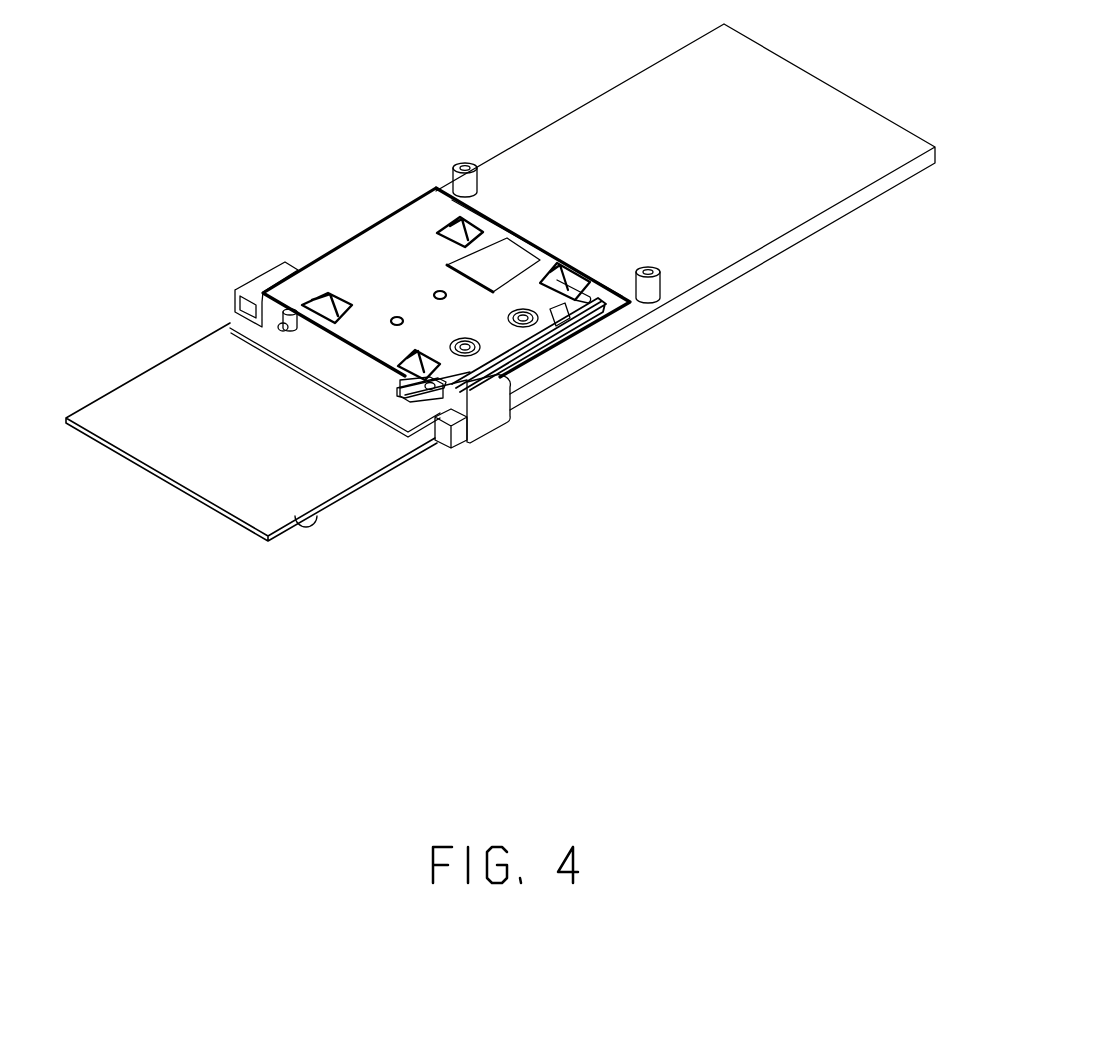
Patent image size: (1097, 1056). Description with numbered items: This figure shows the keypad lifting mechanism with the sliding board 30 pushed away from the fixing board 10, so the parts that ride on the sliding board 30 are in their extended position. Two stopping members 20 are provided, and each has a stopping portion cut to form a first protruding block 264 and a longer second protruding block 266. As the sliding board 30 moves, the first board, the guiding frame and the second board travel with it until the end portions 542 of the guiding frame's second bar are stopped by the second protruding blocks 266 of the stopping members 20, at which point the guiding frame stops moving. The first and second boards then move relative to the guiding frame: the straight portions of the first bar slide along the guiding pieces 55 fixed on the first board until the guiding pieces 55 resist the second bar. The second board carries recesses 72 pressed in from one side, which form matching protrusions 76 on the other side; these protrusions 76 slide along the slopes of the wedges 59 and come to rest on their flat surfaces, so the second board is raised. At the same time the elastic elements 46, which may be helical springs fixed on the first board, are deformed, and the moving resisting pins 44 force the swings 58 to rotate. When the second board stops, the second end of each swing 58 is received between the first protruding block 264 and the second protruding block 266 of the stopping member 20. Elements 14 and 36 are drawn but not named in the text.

The fixing board 10 is at (215, 492).
The positioning post 14 is at (305, 530).
The stopping member 20 is at (461, 447).
The first protruding block 264 is at (428, 425).
The second protruding block 266 is at (478, 376).
The sliding board 30 is at (610, 113).
The spacer 36 is at (652, 292).
The resisting pin 44 is at (279, 331).
The elastic element 46 is at (527, 322).
The guiding piece 55 is at (563, 322).
The swing 58 is at (265, 316).
The wedge 59 is at (433, 350).
The recess 72 is at (420, 347).
The protrusion 76 is at (415, 372).
The end portion 542 is at (470, 390).